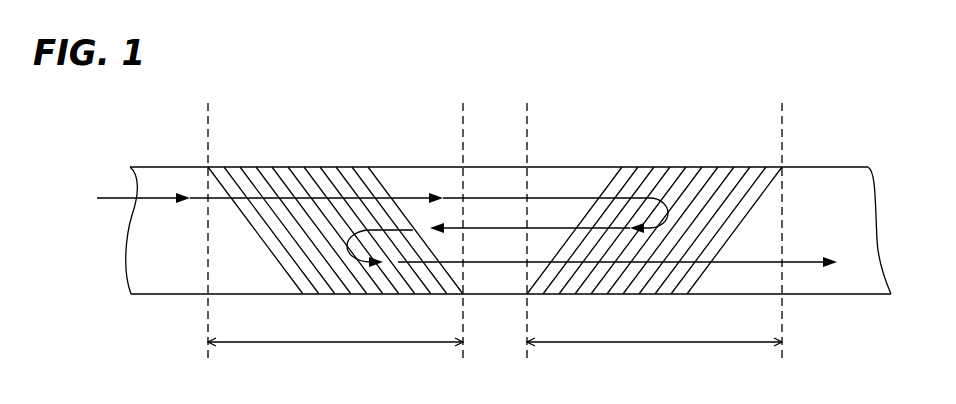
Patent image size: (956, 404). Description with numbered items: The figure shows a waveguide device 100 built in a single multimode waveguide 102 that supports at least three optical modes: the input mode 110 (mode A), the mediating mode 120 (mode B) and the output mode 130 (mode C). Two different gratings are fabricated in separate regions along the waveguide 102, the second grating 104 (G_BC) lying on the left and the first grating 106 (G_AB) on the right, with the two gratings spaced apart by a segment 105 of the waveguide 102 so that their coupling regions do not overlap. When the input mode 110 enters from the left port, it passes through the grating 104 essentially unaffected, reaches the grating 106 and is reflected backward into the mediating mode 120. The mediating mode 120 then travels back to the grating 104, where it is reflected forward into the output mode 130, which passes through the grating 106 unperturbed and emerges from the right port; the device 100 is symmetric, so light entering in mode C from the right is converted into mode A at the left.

The waveguide device 100 is at (362, 65).
The waveguide 102 is at (162, 277).
The second grating 104 is at (310, 167).
The segment 105 is at (480, 167).
The first grating 106 is at (668, 167).
The input mode 110 is at (440, 194).
The mediating mode 120 is at (533, 226).
The output mode 130 is at (480, 263).